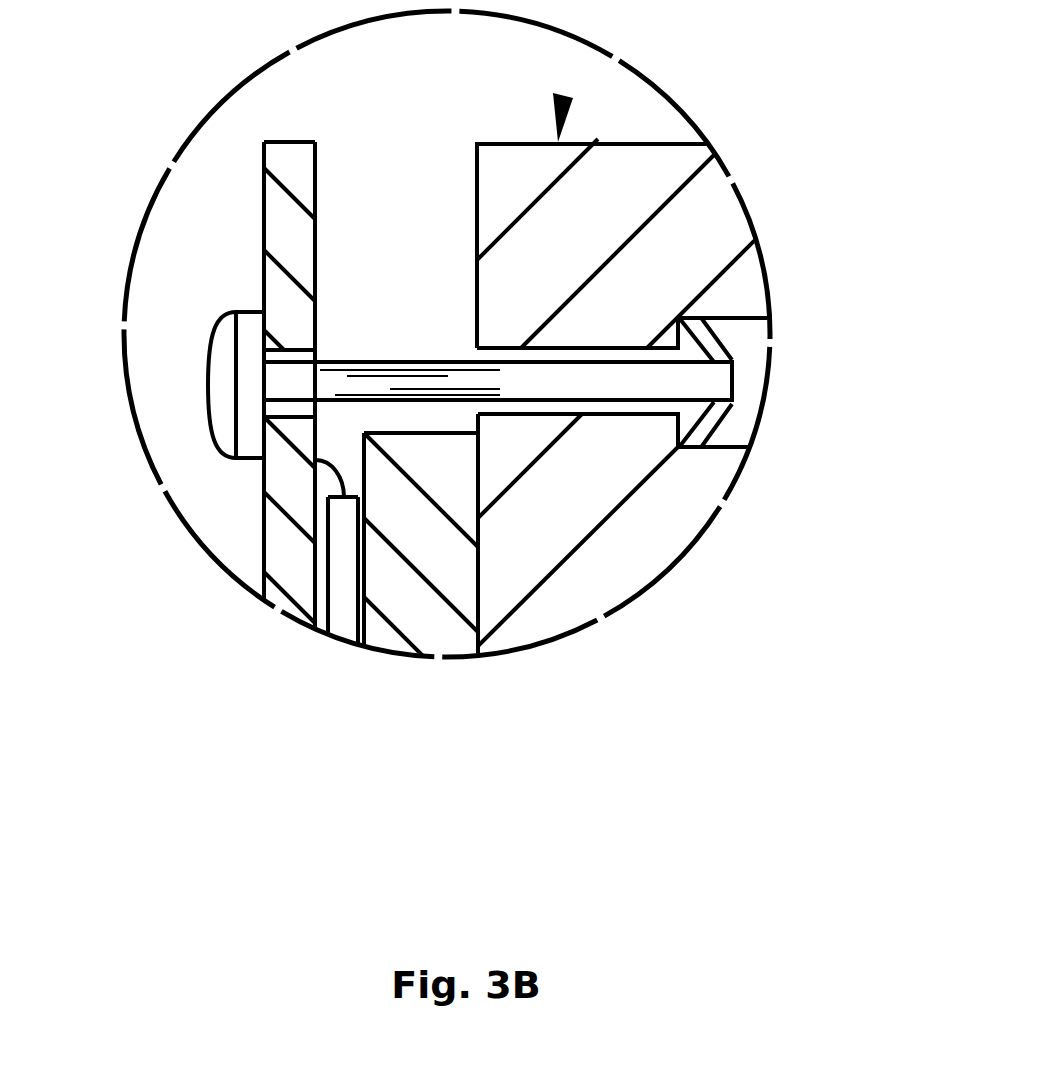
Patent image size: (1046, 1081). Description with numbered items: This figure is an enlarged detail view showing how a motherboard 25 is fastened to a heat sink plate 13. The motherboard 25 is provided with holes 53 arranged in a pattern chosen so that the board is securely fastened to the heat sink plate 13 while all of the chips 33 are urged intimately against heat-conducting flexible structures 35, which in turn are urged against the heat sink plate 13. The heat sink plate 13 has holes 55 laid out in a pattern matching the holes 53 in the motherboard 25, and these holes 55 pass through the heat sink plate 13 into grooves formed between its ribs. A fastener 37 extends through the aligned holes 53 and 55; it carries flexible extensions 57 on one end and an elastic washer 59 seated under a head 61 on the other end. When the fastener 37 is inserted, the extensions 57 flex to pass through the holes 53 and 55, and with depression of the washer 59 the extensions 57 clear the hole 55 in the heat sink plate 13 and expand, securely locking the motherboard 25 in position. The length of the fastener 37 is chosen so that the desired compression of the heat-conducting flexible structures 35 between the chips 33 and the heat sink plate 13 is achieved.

The heat sink plate 13 is at (562, 94).
The motherboard 25 is at (262, 220).
The chips 33 is at (350, 627).
The heat-conducting flexible structures 35 is at (425, 622).
The fastener 37 is at (345, 360).
The holes 53 is at (298, 420).
The holes 55 is at (600, 418).
The flexible extensions 57 is at (705, 345).
The elastic washer 59 is at (250, 310).
The head 61 is at (207, 365).